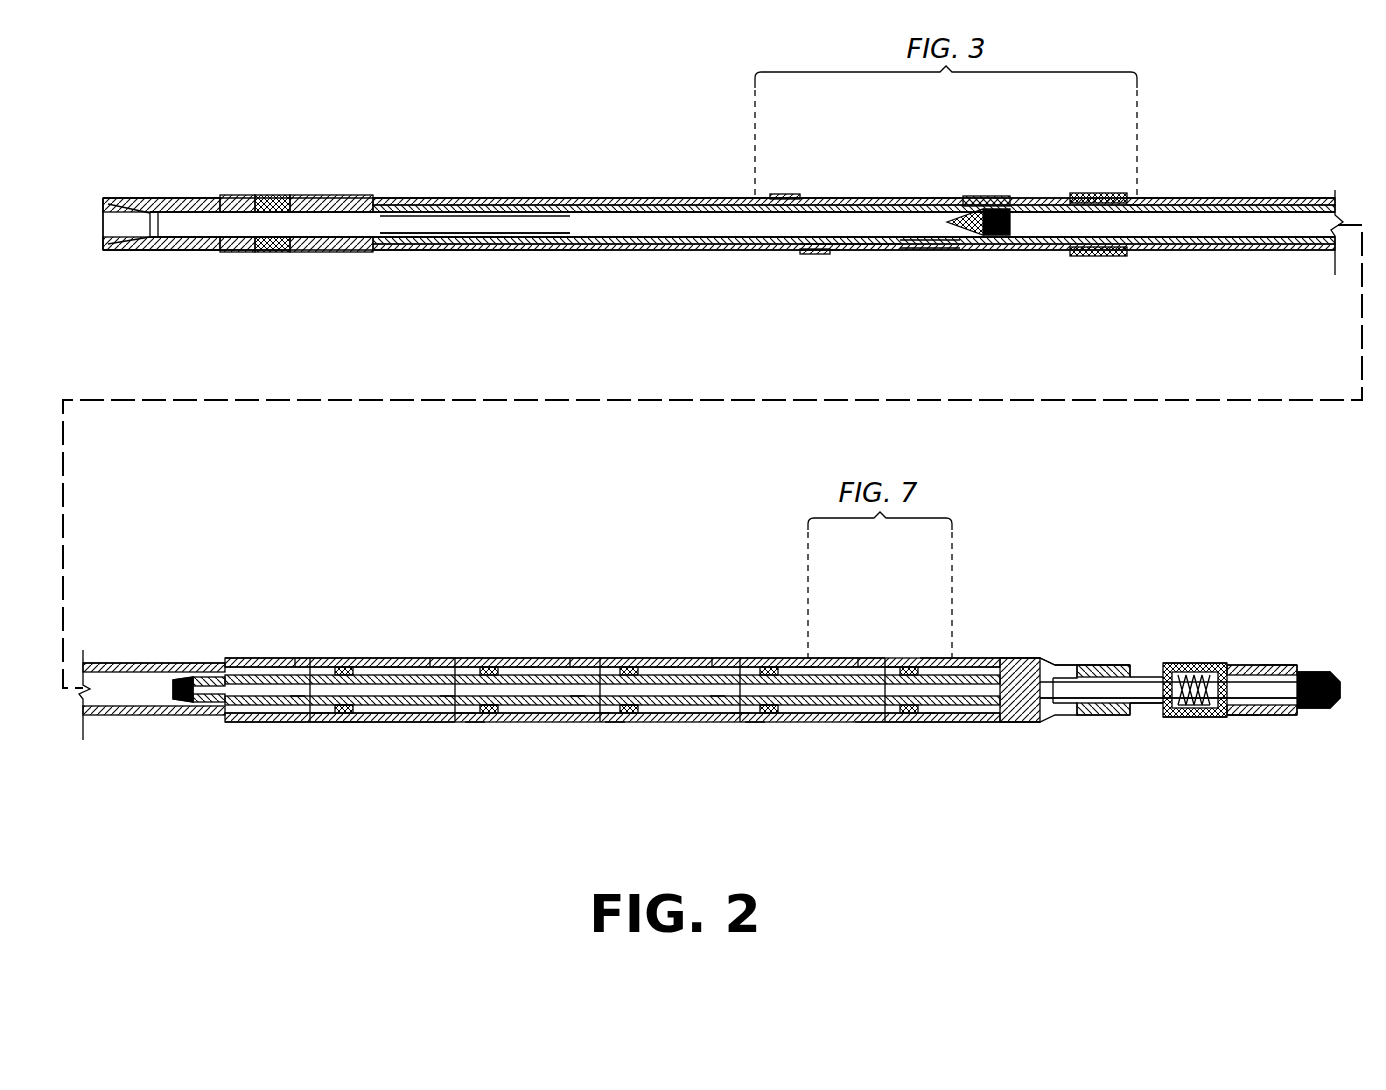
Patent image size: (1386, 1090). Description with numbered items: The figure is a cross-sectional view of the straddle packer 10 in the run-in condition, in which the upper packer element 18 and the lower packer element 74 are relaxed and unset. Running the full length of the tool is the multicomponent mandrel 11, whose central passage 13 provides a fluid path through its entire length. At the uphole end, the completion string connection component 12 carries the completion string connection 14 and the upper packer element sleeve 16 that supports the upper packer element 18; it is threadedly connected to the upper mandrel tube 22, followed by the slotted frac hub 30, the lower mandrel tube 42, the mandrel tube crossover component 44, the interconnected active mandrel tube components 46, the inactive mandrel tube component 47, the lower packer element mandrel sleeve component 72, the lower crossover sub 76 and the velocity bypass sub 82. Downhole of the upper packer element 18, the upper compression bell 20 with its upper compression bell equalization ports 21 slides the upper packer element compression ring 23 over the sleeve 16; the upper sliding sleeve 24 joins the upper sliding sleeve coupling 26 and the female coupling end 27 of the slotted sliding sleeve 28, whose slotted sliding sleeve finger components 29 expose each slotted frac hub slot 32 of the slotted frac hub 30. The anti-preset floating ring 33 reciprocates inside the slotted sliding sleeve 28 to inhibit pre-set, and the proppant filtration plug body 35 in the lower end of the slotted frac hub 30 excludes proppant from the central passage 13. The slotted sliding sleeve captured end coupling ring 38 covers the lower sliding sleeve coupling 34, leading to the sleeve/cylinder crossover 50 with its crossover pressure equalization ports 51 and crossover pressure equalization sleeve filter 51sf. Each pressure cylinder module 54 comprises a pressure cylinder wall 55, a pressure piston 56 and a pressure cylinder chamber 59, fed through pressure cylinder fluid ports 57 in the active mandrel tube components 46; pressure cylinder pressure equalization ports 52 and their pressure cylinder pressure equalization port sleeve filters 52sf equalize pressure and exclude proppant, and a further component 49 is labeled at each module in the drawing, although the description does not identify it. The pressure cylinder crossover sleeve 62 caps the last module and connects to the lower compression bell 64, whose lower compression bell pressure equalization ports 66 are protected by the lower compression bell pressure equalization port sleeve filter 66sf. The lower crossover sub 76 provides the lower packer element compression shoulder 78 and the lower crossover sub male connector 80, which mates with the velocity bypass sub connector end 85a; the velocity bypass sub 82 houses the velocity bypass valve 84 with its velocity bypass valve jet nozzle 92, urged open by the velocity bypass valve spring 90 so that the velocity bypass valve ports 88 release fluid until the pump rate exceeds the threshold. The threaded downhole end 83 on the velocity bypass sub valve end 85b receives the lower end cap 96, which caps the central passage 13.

The straddle packer 10 is at (568, 92).
The multicomponent mandrel 11 is at (177, 192).
The completion string connection component 12 is at (152, 250).
The central passage 13 is at (637, 224).
The completion string connection 14 is at (110, 205).
The upper packer element sleeve 16 is at (238, 238).
The upper packer element 18 is at (258, 198).
The upper compression bell 20 is at (362, 198).
The upper compression bell equalization ports 21 is at (392, 252).
The upper mandrel tube 22 is at (520, 228).
The upper packer element compression ring 23 is at (298, 198).
The upper sliding sleeve 24 is at (592, 198).
The upper sliding sleeve coupling 26 is at (758, 198).
The female coupling end 27 is at (798, 198).
The slotted sliding sleeve 28 is at (814, 262).
The slotted sliding sleeve finger components 29 is at (828, 252).
The slotted frac hub 30 is at (896, 198).
The slotted frac hub slot 32 is at (950, 198).
The anti-preset floating ring 33 is at (838, 198).
The lower sliding sleeve coupling 34 is at (1130, 193).
The proppant filtration plug body 35 is at (997, 248).
The slotted sliding sleeve captured end coupling ring 38 is at (1075, 193).
The lower mandrel tube 42 is at (1238, 198).
The mandrel tube crossover component 44 is at (180, 668).
The active mandrel tube components 46 is at (240, 716).
The inactive mandrel tube component 47 is at (865, 722).
The seal carrier 49 is at (715, 722).
The sleeve/cylinder crossover 50 is at (240, 665).
The crossover pressure equalization ports 51 is at (838, 722).
The crossover pressure equalization sleeve filter 51sf is at (278, 662).
The pressure cylinder pressure equalization ports 52 is at (835, 660).
The pressure cylinder pressure equalization port sleeve filters 52sf is at (858, 660).
The pressure cylinder modules 54 is at (798, 650).
The pressure cylinder wall 55 is at (765, 722).
The pressure piston 56 is at (750, 722).
The pressure cylinder fluid ports 57 is at (765, 656).
The pressure cylinder chamber 59 is at (735, 722).
The pressure cylinder crossover sleeve 62 is at (896, 660).
The lower compression bell 64 is at (938, 660).
The lower compression bell pressure equalization ports 66 is at (920, 722).
The lower compression bell pressure equalization port sleeve filter 66sf is at (930, 722).
The lower packer element mandrel sleeve component 72 is at (995, 722).
The lower packer element 74 is at (983, 660).
The lower crossover sub 76 is at (1040, 660).
The lower packer element compression shoulder 78 is at (1025, 660).
The lower crossover sub male connector 80 is at (1100, 715).
The velocity bypass sub 82 is at (1183, 650).
The threaded downhole end 83 is at (1275, 665).
The velocity bypass valve 84 is at (1185, 715).
The velocity bypass sub connector end 85a is at (1120, 660).
The velocity bypass sub valve end 85b is at (1240, 662).
The velocity bypass valve ports 88 is at (1215, 715).
The velocity bypass valve spring 90 is at (1200, 715).
The velocity bypass valve jet nozzle 92 is at (1150, 715).
The lower end cap 96 is at (1318, 670).